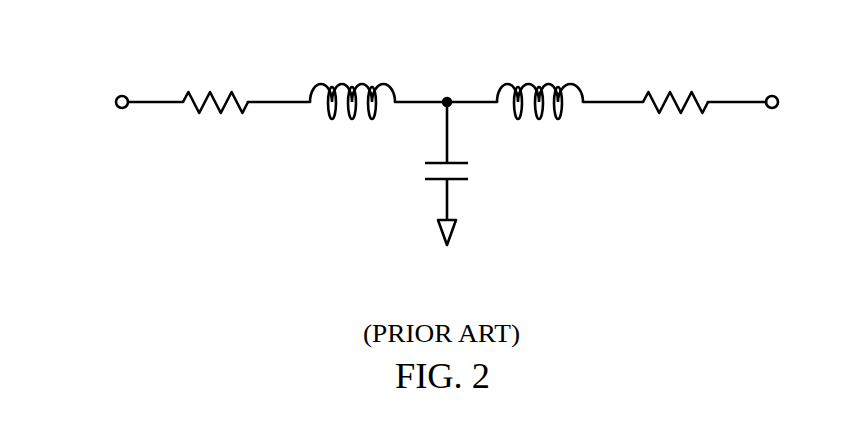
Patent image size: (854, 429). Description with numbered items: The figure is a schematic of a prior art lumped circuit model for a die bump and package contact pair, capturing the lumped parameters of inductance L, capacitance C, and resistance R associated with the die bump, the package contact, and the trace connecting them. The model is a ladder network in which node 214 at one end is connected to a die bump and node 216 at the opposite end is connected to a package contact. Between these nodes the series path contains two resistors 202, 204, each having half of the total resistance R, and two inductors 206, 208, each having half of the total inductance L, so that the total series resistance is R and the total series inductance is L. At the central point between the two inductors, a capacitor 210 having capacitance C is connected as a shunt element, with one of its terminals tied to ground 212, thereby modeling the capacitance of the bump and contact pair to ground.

The resistor 202 is at (215, 113).
The resistor 204 is at (676, 113).
The inductor 206 is at (352, 119).
The inductor 208 is at (539, 119).
The capacitor 210 is at (461, 182).
The ground 212 is at (441, 234).
The node 214 is at (121, 108).
The node 216 is at (774, 108).